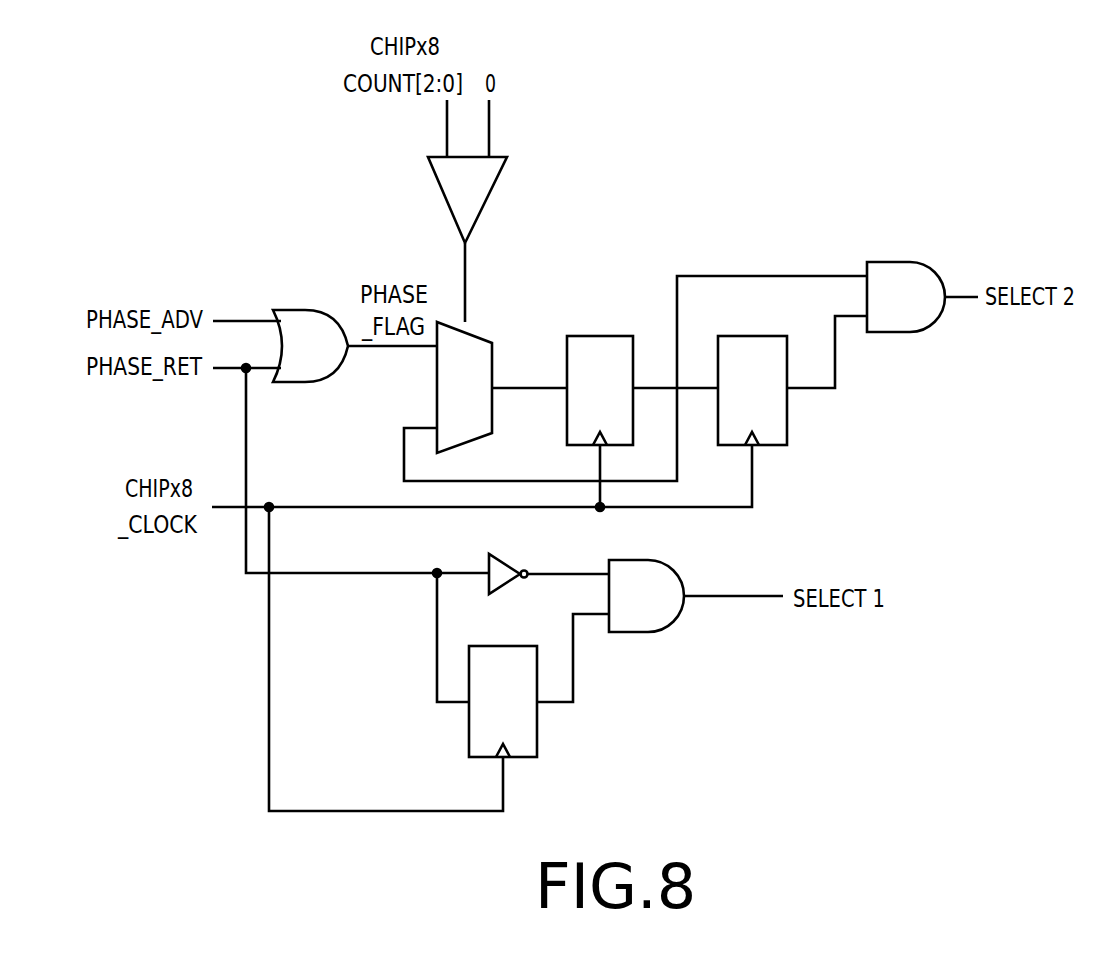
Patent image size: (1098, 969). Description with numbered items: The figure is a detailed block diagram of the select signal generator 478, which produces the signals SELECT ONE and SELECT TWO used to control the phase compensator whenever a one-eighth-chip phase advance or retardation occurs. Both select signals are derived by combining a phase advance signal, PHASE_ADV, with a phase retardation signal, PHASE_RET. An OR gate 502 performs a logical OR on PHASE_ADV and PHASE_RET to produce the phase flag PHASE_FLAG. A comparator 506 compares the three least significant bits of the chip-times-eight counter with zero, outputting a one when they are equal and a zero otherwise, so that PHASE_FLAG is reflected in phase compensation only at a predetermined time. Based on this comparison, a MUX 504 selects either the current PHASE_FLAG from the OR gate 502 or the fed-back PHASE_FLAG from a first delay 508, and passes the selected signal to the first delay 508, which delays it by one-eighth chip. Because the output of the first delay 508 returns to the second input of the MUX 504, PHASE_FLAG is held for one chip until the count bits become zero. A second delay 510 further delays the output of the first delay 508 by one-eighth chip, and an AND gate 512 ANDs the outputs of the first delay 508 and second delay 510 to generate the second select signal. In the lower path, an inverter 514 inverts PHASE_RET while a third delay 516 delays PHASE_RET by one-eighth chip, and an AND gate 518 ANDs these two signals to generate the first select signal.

The select signal generator 478 is at (800, 714).
The OR gate 502 is at (300, 310).
The MUX 504 is at (468, 333).
The comparator 506 is at (488, 203).
The first delay 508 is at (604, 336).
The second delay 510 is at (755, 336).
The AND gate 512 is at (893, 262).
The inverter 514 is at (510, 553).
The third delay 516 is at (510, 646).
The AND gate 518 is at (633, 560).